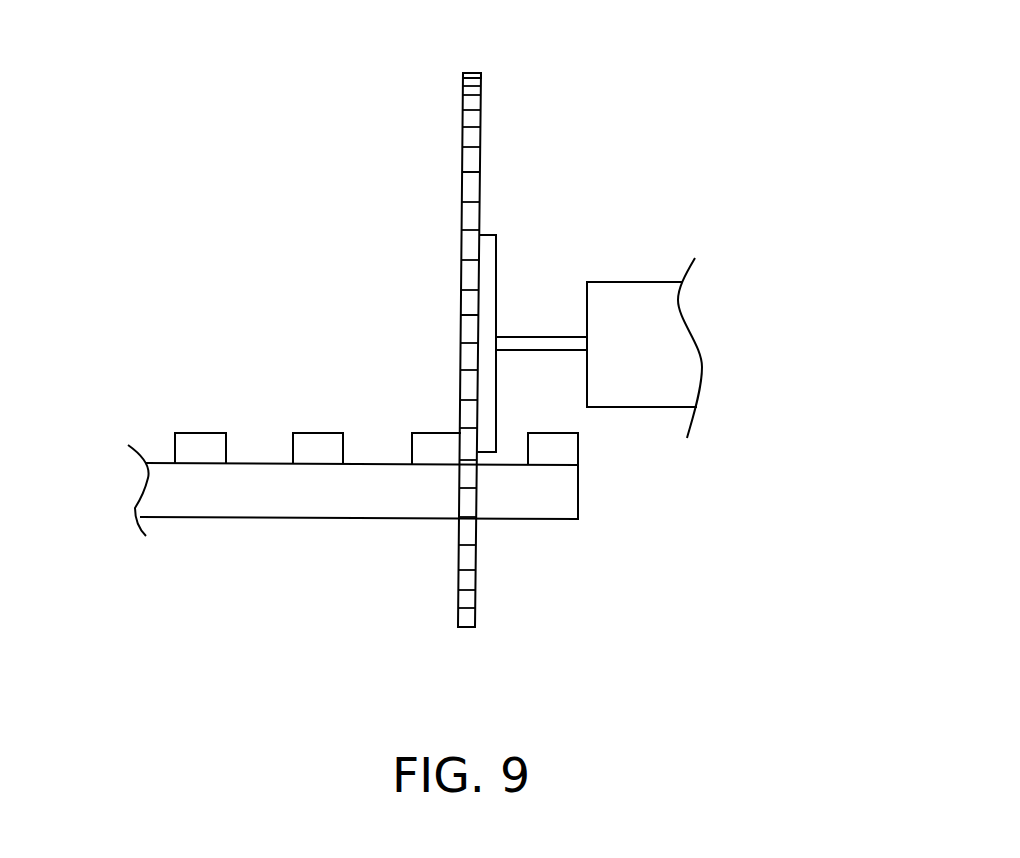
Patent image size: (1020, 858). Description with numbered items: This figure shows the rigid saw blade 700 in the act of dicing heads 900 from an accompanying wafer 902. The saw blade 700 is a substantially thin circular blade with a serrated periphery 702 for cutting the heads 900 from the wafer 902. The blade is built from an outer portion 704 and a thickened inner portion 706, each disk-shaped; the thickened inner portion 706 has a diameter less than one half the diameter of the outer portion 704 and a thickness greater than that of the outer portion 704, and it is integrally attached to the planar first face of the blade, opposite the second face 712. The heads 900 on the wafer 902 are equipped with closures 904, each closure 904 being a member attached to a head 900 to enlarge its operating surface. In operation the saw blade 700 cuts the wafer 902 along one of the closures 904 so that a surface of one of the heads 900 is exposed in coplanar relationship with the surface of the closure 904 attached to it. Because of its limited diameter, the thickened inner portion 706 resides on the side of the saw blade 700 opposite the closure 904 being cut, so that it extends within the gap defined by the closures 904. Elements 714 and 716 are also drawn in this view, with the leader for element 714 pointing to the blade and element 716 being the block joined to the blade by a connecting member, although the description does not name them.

The saw blade 700 is at (285, 165).
The serrated periphery 702 is at (472, 73).
The outer portion 704 is at (482, 132).
The thickened inner portion 706 is at (496, 266).
The second face 712 is at (462, 317).
The layer of stacked component 714 is at (481, 173).
The housing 716 is at (653, 384).
The heads 900 is at (397, 497).
The wafer 902 is at (556, 539).
The closures 904 is at (568, 447).